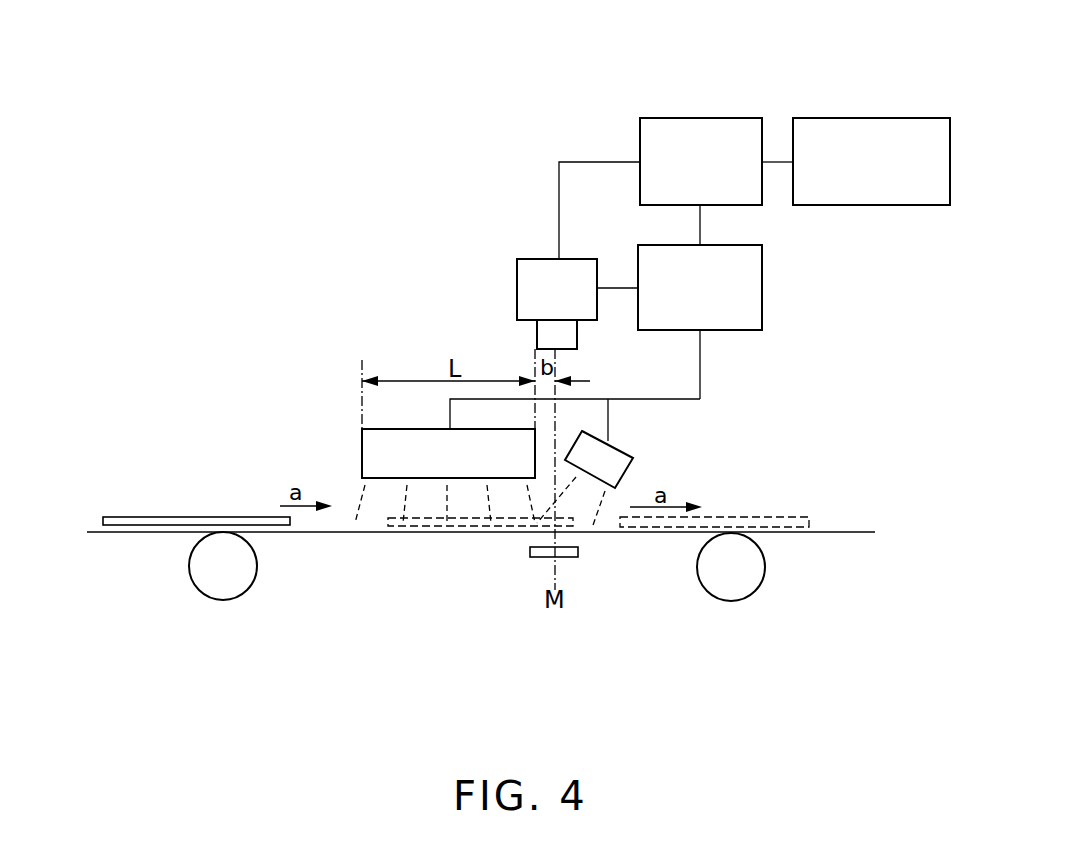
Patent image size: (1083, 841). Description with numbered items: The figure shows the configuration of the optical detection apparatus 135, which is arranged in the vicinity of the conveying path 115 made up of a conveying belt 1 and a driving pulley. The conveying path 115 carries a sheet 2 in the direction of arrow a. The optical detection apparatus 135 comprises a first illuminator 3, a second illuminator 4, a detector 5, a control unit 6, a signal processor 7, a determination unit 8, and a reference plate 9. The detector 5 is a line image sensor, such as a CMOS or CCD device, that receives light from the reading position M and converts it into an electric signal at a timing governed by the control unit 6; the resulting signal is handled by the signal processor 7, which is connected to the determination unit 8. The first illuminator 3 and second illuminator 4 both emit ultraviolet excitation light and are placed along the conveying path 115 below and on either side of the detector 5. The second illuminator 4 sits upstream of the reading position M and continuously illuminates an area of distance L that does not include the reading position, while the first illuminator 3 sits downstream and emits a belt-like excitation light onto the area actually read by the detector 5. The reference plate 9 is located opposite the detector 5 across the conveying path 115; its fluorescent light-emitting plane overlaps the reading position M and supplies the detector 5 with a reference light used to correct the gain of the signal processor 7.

The optical detection apparatus 135 is at (560, 74).
The signal processor 7 is at (738, 118).
The determination unit 8 is at (917, 118).
The control unit 6 is at (762, 272).
The detector 5 is at (577, 259).
The second illuminator 4 is at (362, 458).
The first illuminator 3 is at (622, 447).
The conveying path 115 is at (233, 634).
The conveying belt 1 is at (190, 588).
The sheet 2 is at (120, 527).
The reference plate 9 is at (578, 552).